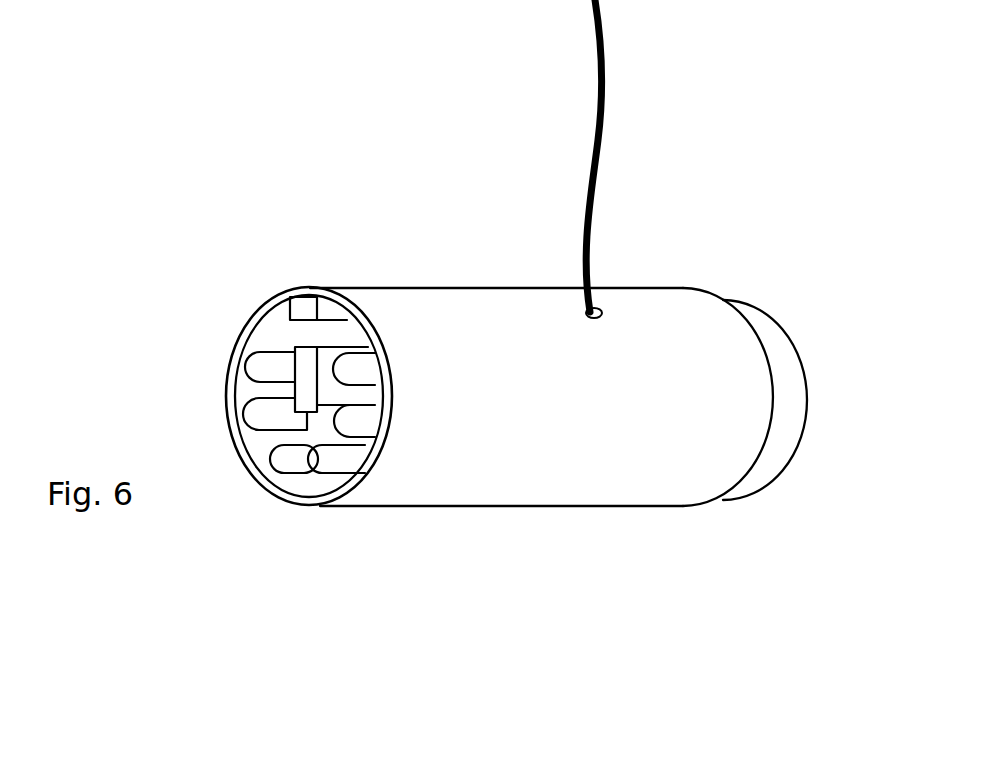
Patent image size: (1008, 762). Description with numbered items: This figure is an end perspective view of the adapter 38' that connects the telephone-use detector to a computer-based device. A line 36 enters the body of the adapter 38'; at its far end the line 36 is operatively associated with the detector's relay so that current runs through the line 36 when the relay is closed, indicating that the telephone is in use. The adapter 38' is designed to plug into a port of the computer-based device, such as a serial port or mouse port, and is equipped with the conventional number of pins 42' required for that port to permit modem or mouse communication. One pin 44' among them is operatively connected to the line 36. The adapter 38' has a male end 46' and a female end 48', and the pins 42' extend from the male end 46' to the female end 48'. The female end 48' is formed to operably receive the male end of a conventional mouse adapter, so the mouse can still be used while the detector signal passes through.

The line 36 is at (600, 137).
The adapter 38' is at (541, 306).
The pins 42' is at (264, 567).
The pin 44' is at (506, 488).
The male end 46' is at (823, 308).
The female end 48' is at (227, 313).